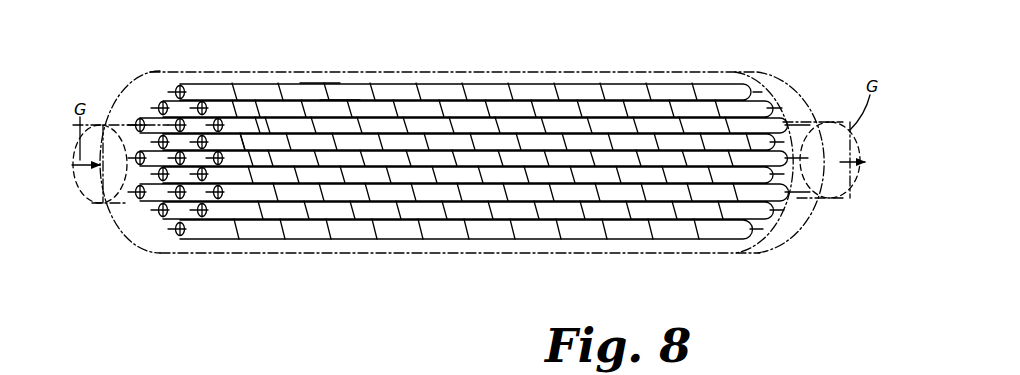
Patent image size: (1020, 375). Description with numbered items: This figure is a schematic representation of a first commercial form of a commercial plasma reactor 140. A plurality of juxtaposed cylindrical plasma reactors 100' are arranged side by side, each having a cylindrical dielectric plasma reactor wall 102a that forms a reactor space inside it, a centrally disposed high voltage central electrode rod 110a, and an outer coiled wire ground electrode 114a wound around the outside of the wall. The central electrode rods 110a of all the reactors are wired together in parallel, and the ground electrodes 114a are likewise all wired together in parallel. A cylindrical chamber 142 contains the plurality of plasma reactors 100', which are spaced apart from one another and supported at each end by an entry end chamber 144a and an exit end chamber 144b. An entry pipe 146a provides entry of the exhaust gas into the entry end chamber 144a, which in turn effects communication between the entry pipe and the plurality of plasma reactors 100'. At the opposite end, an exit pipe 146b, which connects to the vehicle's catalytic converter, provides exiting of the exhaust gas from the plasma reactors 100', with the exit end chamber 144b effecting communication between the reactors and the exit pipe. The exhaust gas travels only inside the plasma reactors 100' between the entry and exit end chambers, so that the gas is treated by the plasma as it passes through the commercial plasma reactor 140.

The cylindrical plasma reactors 100' is at (475, 164).
The cylindrical dielectric plasma reactor wall 102a is at (338, 111).
The high voltage central electrode rod 110a is at (138, 121).
The outer coiled wire ground electrode 114a is at (259, 134).
The commercial plasma reactor 140 is at (655, 61).
The cylindrical chamber 142 is at (393, 255).
The entry end chamber 144a is at (203, 247).
The exit end chamber 144b is at (806, 234).
The entry pipe 146a is at (121, 246).
The exit pipe 146b is at (848, 200).